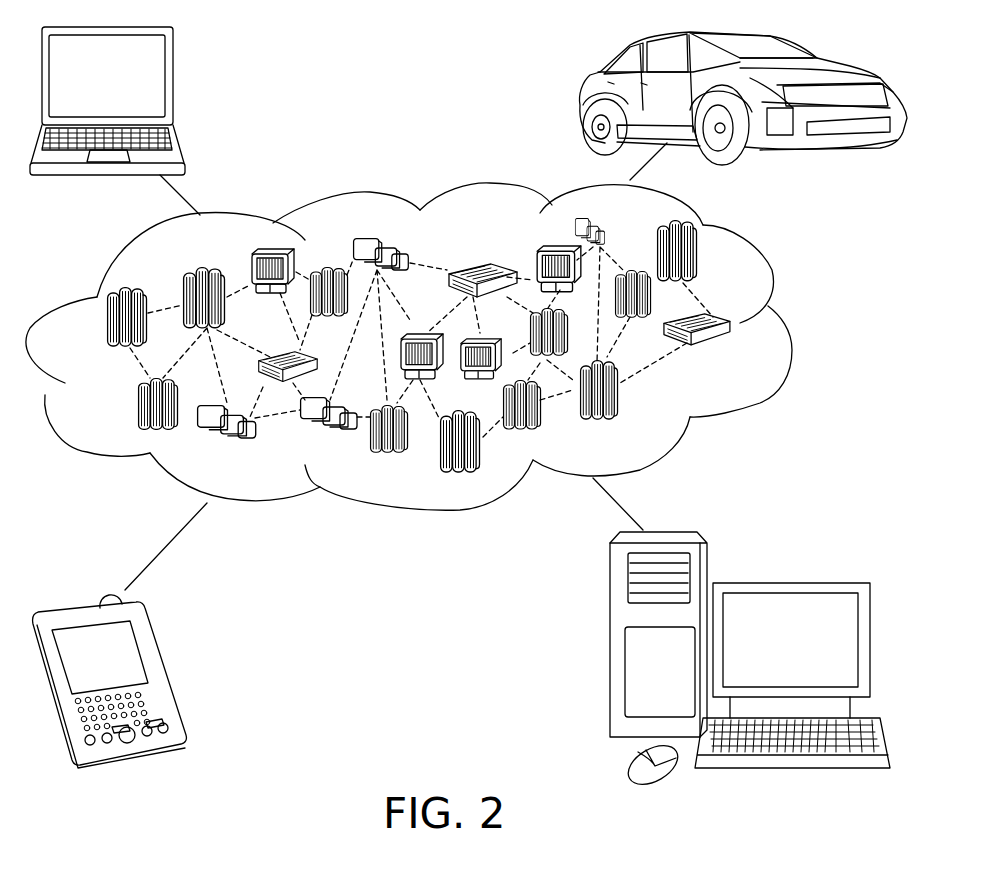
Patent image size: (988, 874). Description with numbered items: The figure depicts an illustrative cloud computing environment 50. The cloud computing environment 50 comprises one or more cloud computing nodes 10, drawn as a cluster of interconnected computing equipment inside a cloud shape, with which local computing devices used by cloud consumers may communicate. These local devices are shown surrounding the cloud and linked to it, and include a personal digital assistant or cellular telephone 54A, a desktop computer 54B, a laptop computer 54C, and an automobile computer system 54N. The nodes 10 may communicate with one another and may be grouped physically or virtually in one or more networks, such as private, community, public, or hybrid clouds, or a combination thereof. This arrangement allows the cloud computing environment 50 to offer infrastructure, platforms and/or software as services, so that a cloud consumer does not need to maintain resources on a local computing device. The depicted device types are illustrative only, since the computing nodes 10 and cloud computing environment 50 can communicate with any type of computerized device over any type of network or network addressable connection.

The cloud computing nodes 10 is at (436, 346).
The cloud computing environment 50 is at (787, 327).
The personal digital assistant (PDA) or cellular telephone 54A is at (160, 666).
The desktop computer 54B is at (790, 583).
The laptop computer 54C is at (175, 80).
The automobile computer system 54N is at (580, 100).